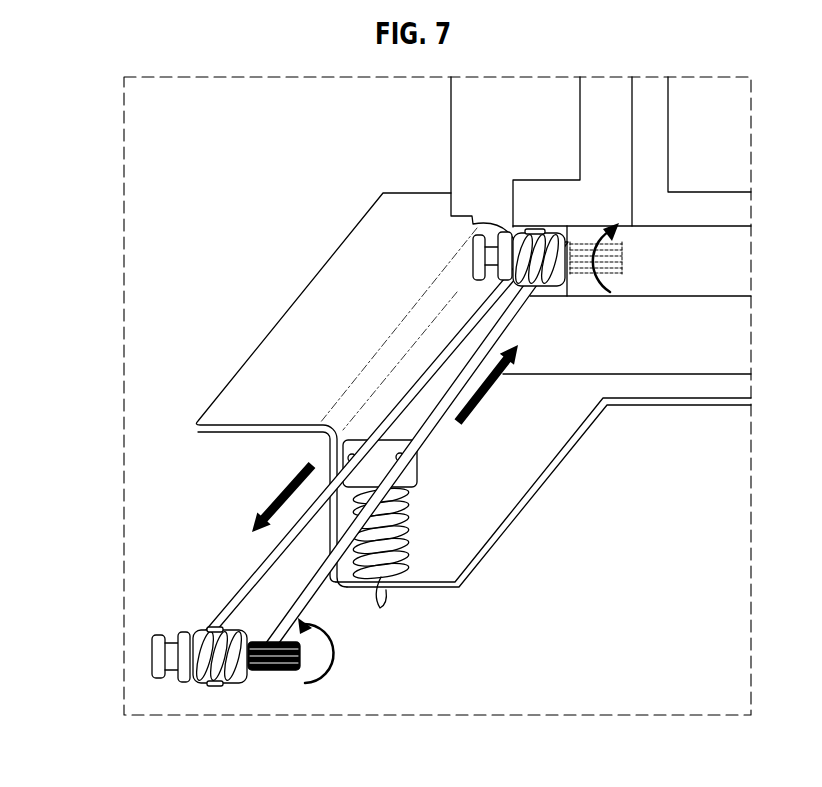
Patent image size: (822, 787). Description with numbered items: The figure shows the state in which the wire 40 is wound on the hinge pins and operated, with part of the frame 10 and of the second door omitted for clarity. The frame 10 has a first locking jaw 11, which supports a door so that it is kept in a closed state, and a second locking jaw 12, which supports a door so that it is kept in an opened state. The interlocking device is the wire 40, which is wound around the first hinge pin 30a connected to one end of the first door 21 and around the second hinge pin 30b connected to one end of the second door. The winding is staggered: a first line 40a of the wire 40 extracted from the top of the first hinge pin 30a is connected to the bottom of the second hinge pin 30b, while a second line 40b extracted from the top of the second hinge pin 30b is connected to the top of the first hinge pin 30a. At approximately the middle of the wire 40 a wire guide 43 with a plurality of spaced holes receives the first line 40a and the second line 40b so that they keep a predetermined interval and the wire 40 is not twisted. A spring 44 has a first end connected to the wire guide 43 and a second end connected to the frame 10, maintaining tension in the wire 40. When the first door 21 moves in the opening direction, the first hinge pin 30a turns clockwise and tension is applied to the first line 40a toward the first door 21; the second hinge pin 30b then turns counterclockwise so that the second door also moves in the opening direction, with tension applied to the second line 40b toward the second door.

The frame 10 is at (313, 272).
The first locking jaw 11 is at (523, 445).
The second locking jaw 12 is at (725, 337).
The first door 21 is at (728, 209).
The first hinge pin 30a is at (470, 253).
The second hinge pin 30b is at (268, 670).
The wire 40 is at (294, 442).
The first line 40a is at (297, 607).
The second line 40b is at (213, 612).
The wire guide 43 is at (412, 470).
The spring 44 is at (403, 560).